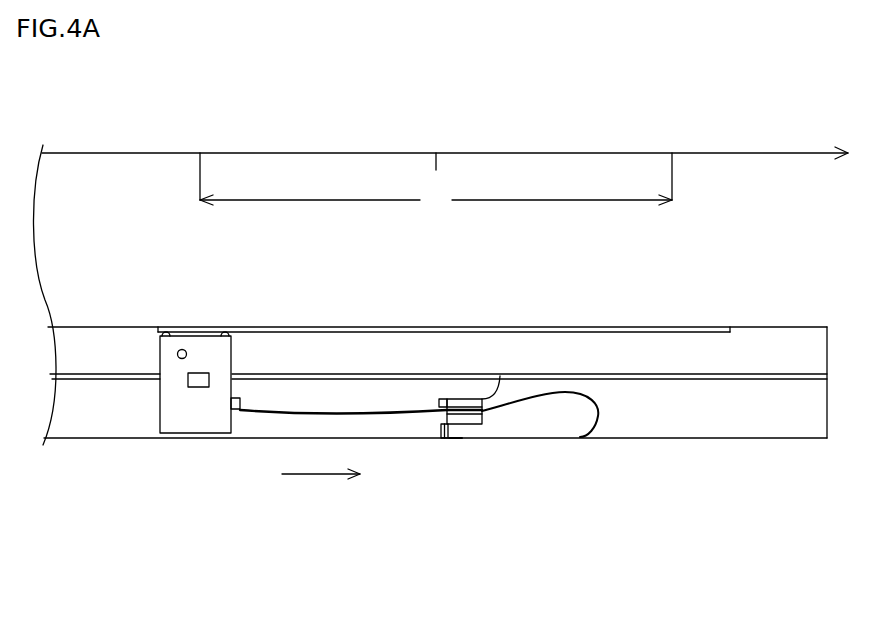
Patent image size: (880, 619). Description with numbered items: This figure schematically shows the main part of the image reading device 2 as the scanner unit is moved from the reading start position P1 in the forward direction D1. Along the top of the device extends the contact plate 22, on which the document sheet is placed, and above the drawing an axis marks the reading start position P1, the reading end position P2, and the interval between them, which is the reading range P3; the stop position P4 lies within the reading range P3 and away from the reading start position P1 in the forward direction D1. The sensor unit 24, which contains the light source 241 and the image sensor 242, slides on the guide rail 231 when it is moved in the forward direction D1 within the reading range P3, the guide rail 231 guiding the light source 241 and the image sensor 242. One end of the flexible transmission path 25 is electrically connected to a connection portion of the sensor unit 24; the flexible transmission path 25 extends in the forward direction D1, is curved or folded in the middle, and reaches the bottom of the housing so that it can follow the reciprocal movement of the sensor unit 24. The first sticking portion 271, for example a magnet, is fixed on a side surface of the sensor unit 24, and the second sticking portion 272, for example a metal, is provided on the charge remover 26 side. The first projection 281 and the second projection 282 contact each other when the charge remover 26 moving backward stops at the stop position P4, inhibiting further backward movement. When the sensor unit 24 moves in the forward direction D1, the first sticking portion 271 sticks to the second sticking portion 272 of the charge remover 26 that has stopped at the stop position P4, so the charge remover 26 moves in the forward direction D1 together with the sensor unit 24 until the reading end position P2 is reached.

The image reading device 2 is at (93, 290).
The contact plate 22 is at (587, 327).
The guide rail 231 is at (702, 373).
The sensor unit 24 is at (159, 334).
The light source 241 is at (182, 362).
The image sensor 242 is at (201, 388).
The flexible transmission path 25 is at (294, 410).
The charge remover 26 is at (460, 399).
The first sticking portion 271 is at (240, 398).
The second sticking portion 272 is at (439, 399).
The first projection 281 is at (440, 426).
The second projection 282 is at (456, 438).
The reading start position P1 is at (200, 162).
The reading end position P2 is at (675, 162).
The reading range P3 is at (436, 199).
The stop position P4 is at (436, 147).
The forward direction D1 is at (301, 473).